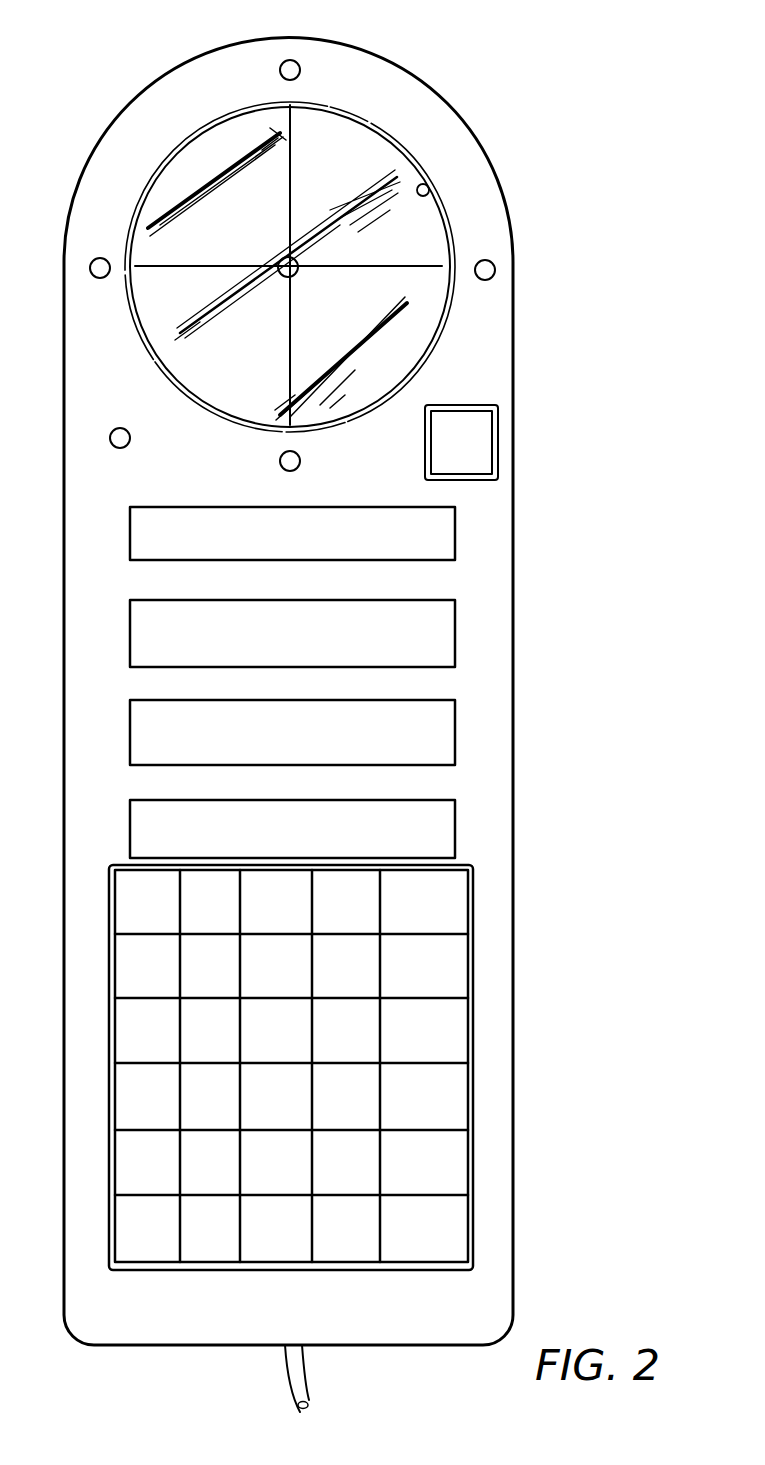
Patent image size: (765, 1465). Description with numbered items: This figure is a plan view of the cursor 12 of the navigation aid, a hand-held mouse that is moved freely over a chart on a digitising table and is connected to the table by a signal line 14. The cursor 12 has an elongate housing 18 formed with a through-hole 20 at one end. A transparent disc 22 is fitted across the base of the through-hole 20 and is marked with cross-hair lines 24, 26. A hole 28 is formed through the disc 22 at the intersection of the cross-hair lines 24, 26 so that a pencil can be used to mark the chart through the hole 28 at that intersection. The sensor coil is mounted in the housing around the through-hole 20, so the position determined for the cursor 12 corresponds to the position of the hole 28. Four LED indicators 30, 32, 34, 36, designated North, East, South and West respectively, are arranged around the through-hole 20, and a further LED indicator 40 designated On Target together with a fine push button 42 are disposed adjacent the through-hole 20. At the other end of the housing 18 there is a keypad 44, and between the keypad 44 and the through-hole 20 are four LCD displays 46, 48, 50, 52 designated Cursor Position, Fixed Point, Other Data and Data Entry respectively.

The cursor 12 is at (553, 807).
The signal line 14 is at (305, 1398).
The housing 18 is at (80, 725).
The through-hole 20 is at (430, 193).
The transparent disc 22 is at (355, 305).
The cross-hair line 24 is at (442, 266).
The cross-hair line 26 is at (292, 127).
The hole 28 is at (283, 258).
The LED indicator 30 is at (282, 68).
The LED indicator 32 is at (493, 273).
The LED indicator 34 is at (280, 462).
The LED indicator 36 is at (95, 275).
The LED indicator 40 is at (110, 443).
The fine push button 42 is at (498, 447).
The keypad 44 is at (468, 1195).
The LCD display 46 is at (443, 532).
The LCD display 48 is at (447, 640).
The LCD display 50 is at (443, 737).
The LCD display 52 is at (443, 835).